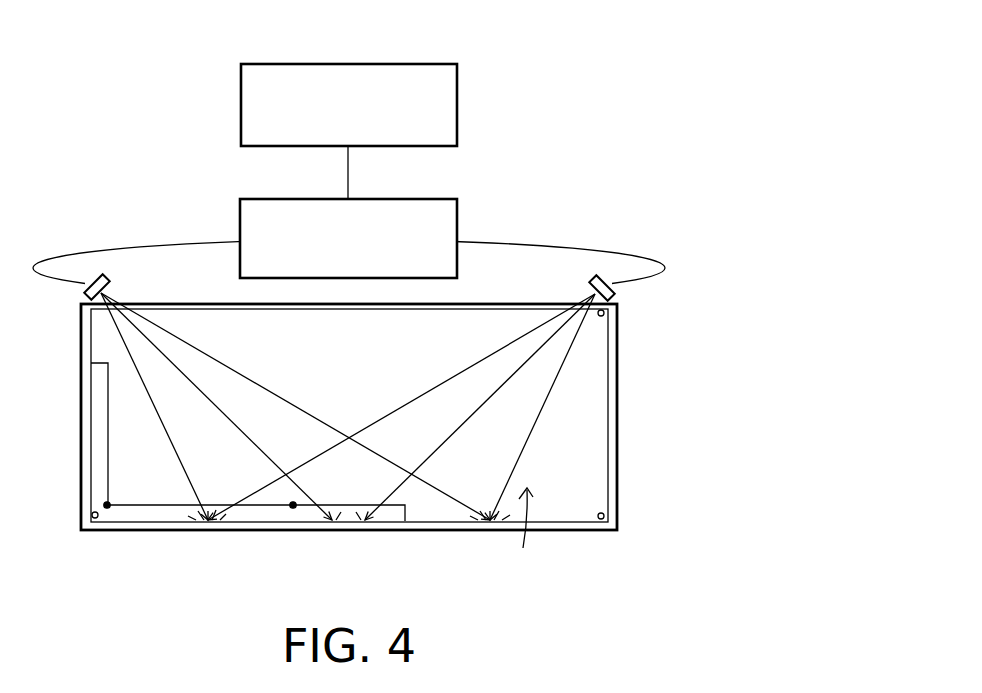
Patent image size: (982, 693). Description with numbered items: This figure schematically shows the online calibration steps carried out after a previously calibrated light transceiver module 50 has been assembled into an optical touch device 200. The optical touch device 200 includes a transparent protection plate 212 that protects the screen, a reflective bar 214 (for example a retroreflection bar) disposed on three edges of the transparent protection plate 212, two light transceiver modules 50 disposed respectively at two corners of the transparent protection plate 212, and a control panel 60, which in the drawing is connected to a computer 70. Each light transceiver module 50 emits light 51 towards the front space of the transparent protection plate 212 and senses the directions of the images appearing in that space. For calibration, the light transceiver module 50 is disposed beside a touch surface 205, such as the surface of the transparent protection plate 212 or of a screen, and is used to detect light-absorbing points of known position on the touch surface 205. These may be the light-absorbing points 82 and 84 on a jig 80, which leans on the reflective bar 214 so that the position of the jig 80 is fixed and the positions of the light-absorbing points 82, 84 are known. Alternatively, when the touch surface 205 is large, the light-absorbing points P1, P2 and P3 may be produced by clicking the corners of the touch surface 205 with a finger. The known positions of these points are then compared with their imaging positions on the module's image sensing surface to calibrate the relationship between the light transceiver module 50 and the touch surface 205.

The computer 70 is at (455, 64).
The control panel 60 is at (455, 199).
The optical touch device 200 is at (598, 229).
The light transceiver module 50 is at (82, 290).
The sensing light path 51 is at (188, 342).
The jig 80 is at (100, 420).
The light-absorbing point 82 is at (109, 508).
The light-absorbing point 84 is at (292, 508).
The touch surface 205 is at (525, 534).
The transparent protection plate 212 is at (575, 415).
The reflective bar 214 is at (612, 457).
The light-absorbing point P1 is at (605, 514).
The light-absorbing point P2 is at (603, 318).
The light-absorbing point P3 is at (90, 510).